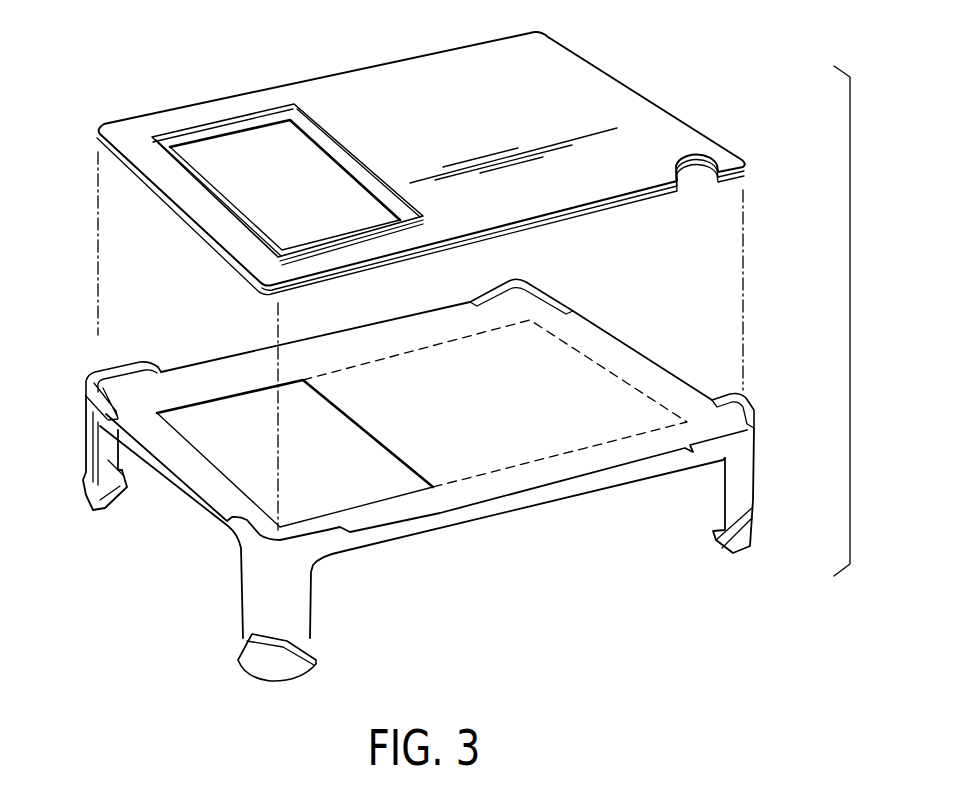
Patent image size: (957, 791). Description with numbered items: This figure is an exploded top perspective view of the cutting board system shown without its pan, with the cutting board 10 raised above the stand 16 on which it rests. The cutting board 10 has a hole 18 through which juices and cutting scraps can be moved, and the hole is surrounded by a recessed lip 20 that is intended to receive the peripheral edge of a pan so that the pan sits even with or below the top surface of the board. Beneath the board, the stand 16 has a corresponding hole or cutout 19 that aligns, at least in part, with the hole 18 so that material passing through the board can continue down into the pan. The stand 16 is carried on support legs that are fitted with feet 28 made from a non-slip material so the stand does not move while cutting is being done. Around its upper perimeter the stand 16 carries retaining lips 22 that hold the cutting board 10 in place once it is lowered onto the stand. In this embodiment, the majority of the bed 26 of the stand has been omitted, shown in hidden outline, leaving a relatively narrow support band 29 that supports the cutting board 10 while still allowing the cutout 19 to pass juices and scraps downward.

The cutting board 10 is at (556, 67).
The stand 16 is at (752, 472).
The hole 18 is at (320, 187).
The hole or cutout 19 is at (264, 475).
The recessed lip 20 is at (212, 130).
The retaining lips 22 is at (116, 370).
The bed 26 is at (573, 373).
The feet 28 is at (298, 673).
The support band 29 is at (654, 380).